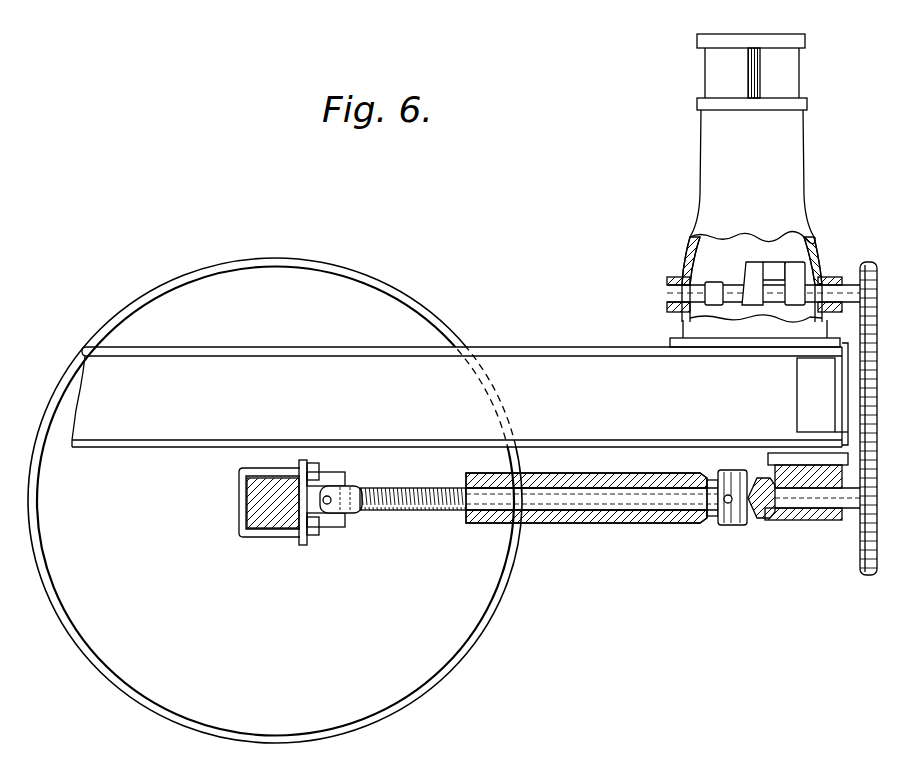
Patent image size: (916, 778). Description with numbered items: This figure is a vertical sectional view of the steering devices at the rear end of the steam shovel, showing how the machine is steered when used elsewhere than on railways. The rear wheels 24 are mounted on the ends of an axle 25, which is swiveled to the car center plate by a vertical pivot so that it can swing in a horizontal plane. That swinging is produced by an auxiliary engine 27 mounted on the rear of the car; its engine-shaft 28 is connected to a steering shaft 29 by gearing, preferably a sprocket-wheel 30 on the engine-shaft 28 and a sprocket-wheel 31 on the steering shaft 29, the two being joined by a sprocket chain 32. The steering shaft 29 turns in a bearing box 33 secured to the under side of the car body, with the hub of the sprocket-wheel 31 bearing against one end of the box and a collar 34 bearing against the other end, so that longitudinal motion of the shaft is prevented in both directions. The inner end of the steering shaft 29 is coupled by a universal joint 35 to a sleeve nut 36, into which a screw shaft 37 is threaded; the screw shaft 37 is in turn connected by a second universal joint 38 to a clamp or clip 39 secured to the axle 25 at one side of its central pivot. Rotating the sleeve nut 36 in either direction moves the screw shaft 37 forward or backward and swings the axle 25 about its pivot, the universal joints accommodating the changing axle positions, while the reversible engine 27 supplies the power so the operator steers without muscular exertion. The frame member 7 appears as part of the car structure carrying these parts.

The frame 7 is at (552, 356).
The rear wheels 24 is at (487, 628).
The axle 25 is at (255, 493).
The auxiliary engine 27 is at (725, 174).
The engine-shaft 28 is at (668, 291).
The steering shaft 29 is at (812, 497).
The sprocket-wheel 30 is at (862, 263).
The sprocket-wheel 31 is at (862, 433).
The sprocket chain 32 is at (862, 373).
The bearing box 33 is at (830, 521).
The collar 34 is at (763, 519).
The universal joint 35 is at (724, 526).
The sleeve nut 36 is at (654, 524).
The screw shaft 37 is at (432, 511).
The universal joint 38 is at (345, 487).
The clamp or clip 39 is at (283, 536).